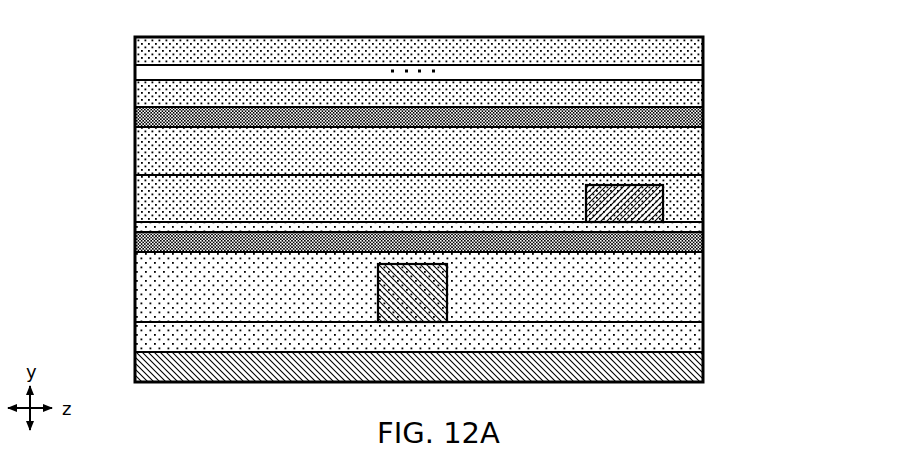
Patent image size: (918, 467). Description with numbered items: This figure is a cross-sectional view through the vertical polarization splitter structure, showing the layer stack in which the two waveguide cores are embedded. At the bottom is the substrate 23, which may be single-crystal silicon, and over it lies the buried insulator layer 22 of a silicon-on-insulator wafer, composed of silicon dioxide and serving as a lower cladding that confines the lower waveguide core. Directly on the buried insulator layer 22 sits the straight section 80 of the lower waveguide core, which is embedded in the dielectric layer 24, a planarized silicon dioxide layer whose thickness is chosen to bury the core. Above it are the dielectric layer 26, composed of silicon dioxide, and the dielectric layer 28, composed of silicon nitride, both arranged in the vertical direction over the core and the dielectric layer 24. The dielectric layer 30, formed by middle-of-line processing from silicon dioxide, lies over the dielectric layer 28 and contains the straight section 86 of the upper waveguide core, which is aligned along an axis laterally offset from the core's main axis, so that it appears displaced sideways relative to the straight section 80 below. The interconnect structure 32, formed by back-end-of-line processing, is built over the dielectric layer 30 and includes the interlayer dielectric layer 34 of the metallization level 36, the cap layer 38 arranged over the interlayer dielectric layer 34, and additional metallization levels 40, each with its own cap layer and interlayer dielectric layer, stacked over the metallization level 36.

The additional metallization levels 40 is at (116, 37).
The interconnect structure 32 is at (708, 52).
The metallization level 36 is at (116, 108).
The cap layer 38 is at (685, 117).
The interlayer dielectric layer 34 is at (685, 155).
The dielectric layer 30 is at (172, 197).
The straight section 86 is at (647, 207).
The dielectric layer 28 is at (155, 228).
The dielectric layer 26 is at (685, 242).
The dielectric layer 24 is at (155, 290).
The straight section 80 is at (420, 295).
The buried insulator layer 22 is at (153, 340).
The substrate 23 is at (685, 368).